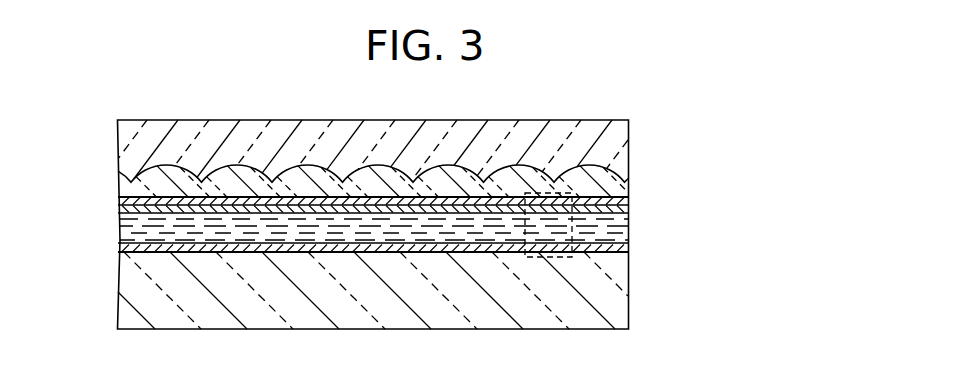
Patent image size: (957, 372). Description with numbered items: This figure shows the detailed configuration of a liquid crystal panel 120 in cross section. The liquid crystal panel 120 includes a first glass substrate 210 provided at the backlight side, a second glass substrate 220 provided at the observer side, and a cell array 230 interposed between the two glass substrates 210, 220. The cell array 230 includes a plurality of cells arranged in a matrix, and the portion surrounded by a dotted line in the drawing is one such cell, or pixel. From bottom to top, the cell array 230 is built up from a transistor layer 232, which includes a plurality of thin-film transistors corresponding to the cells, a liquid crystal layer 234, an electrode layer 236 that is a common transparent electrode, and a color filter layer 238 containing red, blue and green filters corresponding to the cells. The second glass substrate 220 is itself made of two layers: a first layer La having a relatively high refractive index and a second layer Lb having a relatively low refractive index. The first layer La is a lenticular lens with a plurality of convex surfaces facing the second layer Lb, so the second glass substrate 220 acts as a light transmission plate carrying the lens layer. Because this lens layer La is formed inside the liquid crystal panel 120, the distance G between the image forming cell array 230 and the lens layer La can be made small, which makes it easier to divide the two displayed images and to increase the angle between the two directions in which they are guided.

The liquid crystal panel 120 is at (453, 226).
The first glass substrate 210 is at (612, 312).
The second glass substrate 220 is at (447, 158).
The first layer La is at (604, 176).
The second layer Lb is at (614, 141).
The distance G is at (126, 174).
The cell array 230 is at (454, 243).
The transistor layer 232 is at (618, 247).
The liquid crystal layer 234 is at (618, 232).
The electrode layer 236 is at (618, 211).
The color filter layer 238 is at (620, 202).